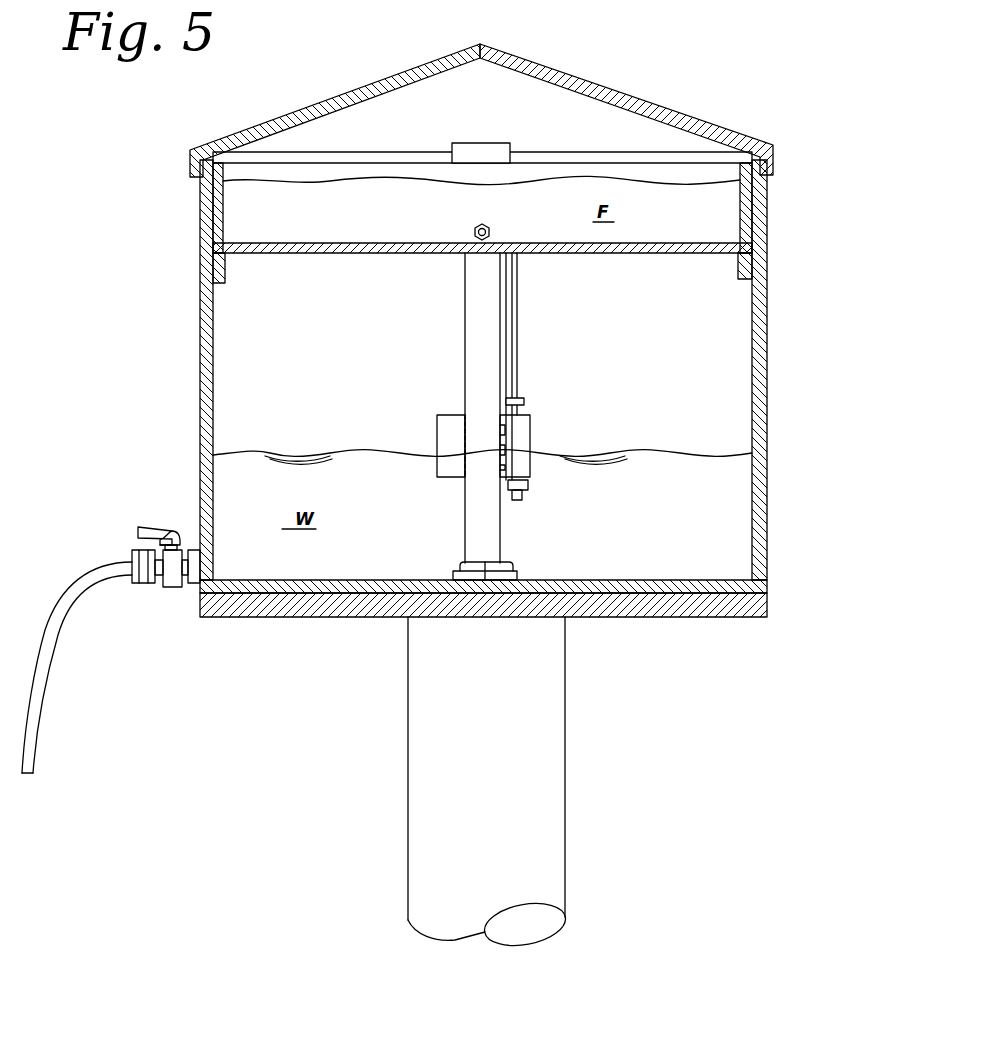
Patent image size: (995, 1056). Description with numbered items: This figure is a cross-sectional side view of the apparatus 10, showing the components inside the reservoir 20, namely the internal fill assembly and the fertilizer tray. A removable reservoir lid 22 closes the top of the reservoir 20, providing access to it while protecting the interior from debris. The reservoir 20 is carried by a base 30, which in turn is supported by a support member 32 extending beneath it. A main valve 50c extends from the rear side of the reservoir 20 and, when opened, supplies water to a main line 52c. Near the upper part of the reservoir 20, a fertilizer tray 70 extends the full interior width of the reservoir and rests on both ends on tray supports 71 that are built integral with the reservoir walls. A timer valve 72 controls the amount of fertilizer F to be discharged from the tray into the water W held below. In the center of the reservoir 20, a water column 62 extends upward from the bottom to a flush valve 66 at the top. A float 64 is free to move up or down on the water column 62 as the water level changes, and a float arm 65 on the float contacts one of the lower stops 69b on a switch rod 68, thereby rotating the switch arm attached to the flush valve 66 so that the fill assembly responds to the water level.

The water purification apparatus 10 is at (132, 267).
The reservoir 20 is at (203, 367).
The removable reservoir lid 22 is at (597, 87).
The base 30 is at (637, 605).
The support member 32 is at (560, 797).
The main valve 50c is at (170, 528).
The main line 52c is at (33, 703).
The water column 62 is at (470, 510).
The float 64 is at (443, 420).
The float arm 65 is at (530, 483).
The flush valve 66 is at (470, 143).
The switch rod 68 is at (517, 335).
The lower stops 69b is at (523, 400).
The fertilizer tray 70 is at (435, 251).
The tray supports 71 is at (224, 270).
The timer valve 72 is at (482, 202).